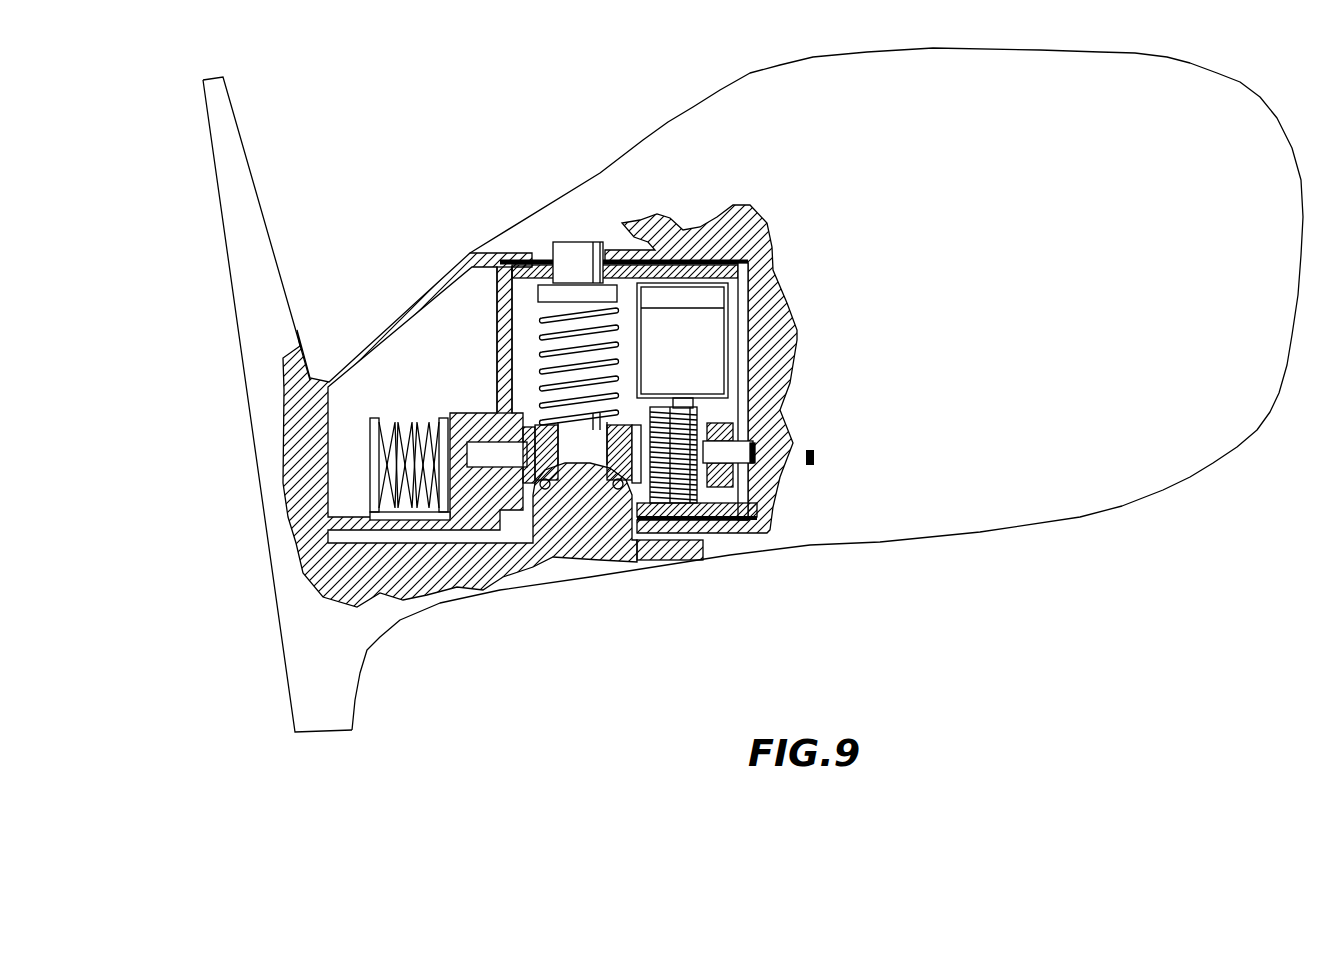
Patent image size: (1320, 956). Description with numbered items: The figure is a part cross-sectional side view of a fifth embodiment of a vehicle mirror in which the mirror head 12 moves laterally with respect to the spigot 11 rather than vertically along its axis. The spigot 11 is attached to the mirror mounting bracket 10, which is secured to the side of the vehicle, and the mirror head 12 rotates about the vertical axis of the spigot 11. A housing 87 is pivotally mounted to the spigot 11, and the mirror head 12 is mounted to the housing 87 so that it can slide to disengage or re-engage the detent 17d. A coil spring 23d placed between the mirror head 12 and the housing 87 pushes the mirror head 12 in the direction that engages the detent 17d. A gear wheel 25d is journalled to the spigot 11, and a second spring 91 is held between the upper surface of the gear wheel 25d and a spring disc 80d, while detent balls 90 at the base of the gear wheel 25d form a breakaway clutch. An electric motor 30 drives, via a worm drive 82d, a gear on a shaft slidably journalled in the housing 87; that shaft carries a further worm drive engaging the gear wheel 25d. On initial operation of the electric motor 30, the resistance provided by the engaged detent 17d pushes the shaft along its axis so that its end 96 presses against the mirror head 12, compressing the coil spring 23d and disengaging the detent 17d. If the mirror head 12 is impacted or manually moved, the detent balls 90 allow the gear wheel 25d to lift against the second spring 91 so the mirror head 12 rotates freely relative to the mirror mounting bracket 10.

The mirror mounting bracket 10 is at (400, 620).
The spigot 11 is at (577, 253).
The mirror head 12 is at (820, 518).
The detent 17d is at (708, 562).
The coil spring 23d is at (413, 407).
The gear wheel 25d is at (697, 412).
The electric motor 30 is at (693, 332).
The spring disc 80d is at (617, 283).
The worm drive 82d is at (725, 430).
The housing 87 is at (497, 317).
The detent balls 90 is at (551, 489).
The second spring 91 is at (518, 285).
The end of the shaft 96 is at (745, 455).